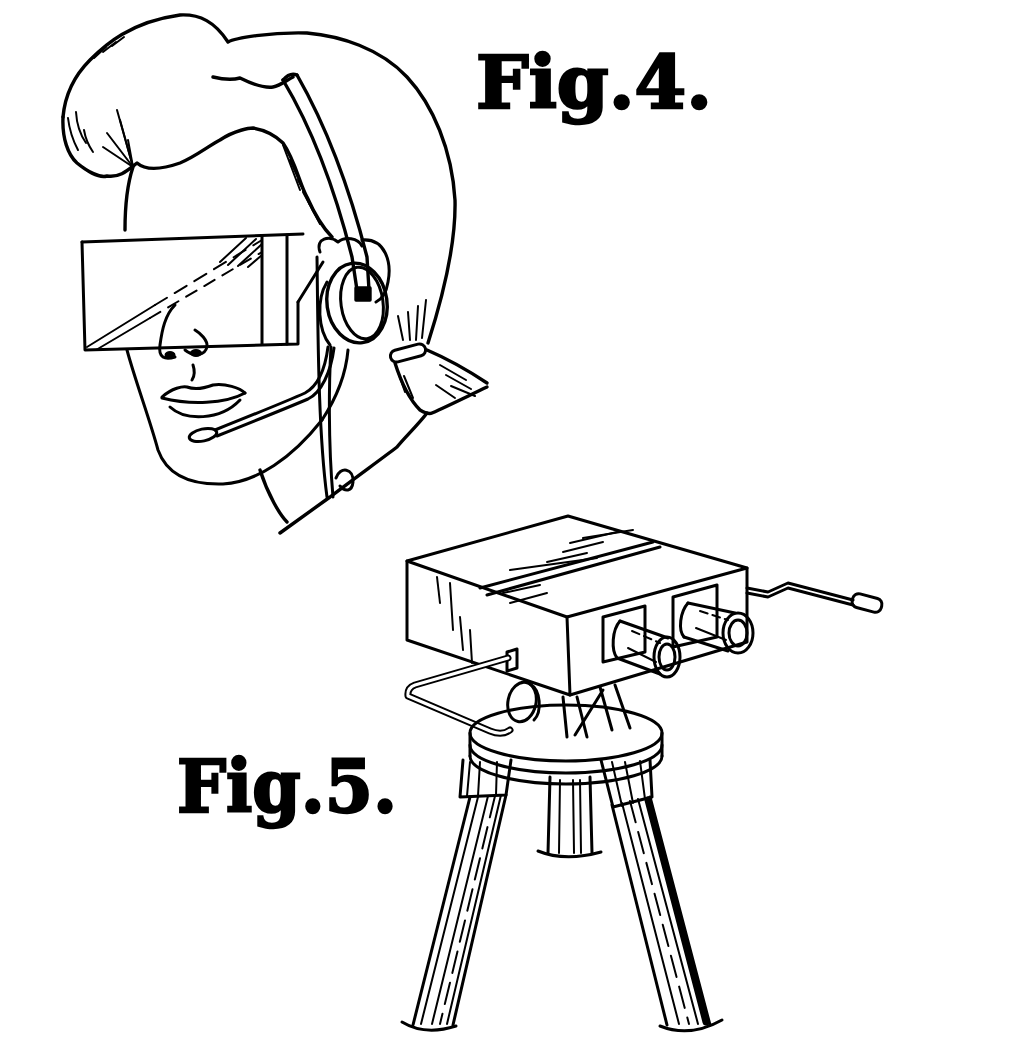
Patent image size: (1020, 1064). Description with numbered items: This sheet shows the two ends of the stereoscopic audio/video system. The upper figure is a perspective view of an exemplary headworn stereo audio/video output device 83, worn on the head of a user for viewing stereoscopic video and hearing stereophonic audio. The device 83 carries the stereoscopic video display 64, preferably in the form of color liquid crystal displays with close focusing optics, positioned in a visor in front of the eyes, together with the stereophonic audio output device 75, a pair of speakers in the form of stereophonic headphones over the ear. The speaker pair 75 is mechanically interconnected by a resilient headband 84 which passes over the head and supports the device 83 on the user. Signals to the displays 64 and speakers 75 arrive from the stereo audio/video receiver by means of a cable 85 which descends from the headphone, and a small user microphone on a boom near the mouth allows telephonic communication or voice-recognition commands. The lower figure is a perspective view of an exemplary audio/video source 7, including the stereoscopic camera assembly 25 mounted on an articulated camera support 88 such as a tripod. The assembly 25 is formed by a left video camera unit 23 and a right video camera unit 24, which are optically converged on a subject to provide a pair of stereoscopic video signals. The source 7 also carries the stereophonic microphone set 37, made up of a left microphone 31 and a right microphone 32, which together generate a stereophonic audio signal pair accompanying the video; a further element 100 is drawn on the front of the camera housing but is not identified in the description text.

In FIG. 4, the stereoscopic video display 64 is at (97, 236).
In FIG. 4, the headworn stereo audio/video output device 83 is at (112, 352).
In FIG. 4, the resilient headband 84 is at (332, 153).
In FIG. 4, the stereophonic audio output device 75 is at (377, 313).
In FIG. 4, the cable 85 is at (340, 483).
In FIG. 5, the audio/video source 7 is at (694, 527).
In FIG. 5, the stereoscopic camera assembly 25 is at (626, 536).
In FIG. 5, the earpiece 100 is at (527, 685).
In FIG. 5, the right microphone 32 is at (483, 733).
In FIG. 5, the right video camera unit 24 is at (687, 661).
In FIG. 5, the left video camera unit 23 is at (764, 634).
In FIG. 5, the stereophonic microphone set 37 is at (795, 578).
In FIG. 5, the left microphone 31 is at (868, 612).
In FIG. 5, the articulated camera support 88 is at (672, 745).